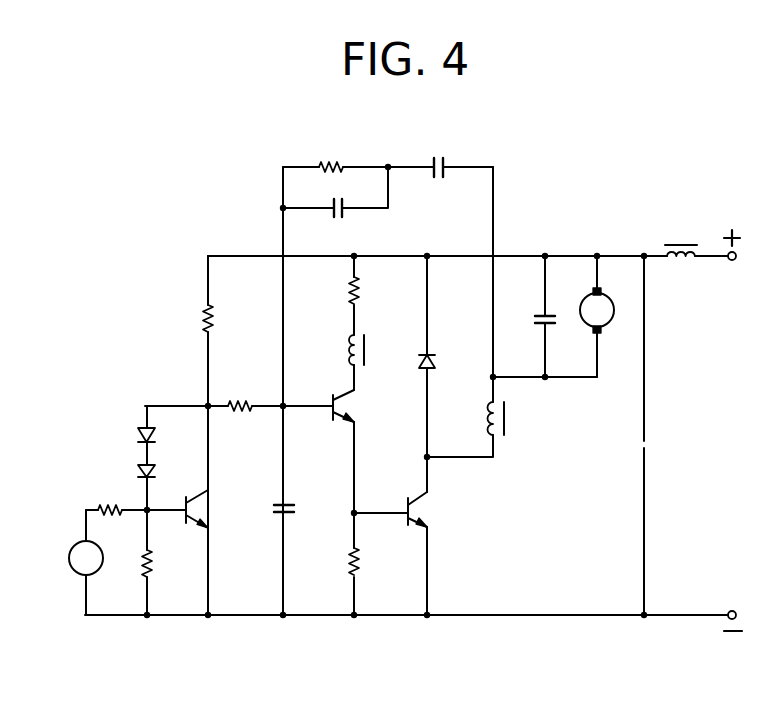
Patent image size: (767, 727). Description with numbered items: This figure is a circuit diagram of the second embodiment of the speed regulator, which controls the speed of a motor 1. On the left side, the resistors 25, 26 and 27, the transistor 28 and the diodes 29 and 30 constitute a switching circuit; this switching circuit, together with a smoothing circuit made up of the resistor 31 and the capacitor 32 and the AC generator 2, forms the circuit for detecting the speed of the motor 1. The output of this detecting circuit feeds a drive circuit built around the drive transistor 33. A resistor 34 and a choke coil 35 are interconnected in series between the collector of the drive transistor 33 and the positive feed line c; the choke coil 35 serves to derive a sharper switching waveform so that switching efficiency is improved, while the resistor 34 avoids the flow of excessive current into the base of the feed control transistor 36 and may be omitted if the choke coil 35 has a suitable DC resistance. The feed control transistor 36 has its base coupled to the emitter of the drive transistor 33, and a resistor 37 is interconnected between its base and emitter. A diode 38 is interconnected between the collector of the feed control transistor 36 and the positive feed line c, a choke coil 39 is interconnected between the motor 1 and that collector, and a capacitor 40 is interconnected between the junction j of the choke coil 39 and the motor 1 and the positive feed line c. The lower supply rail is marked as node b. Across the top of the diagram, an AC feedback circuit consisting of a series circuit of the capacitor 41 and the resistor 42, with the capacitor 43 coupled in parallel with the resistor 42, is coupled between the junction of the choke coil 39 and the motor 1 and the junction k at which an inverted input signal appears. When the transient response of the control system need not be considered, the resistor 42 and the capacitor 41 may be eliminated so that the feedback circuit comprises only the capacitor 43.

The motor 1 is at (612, 326).
The AC generator 2 is at (78, 571).
The resistor 25 is at (121, 513).
The resistor 26 is at (152, 565).
The resistor 27 is at (202, 322).
The transistor 28 is at (200, 511).
The diode 29 is at (137, 434).
The diode 30 is at (138, 470).
The resistor 31 is at (243, 412).
The capacitor 32 is at (296, 508).
The drive transistor 33 is at (349, 405).
The resistor 34 is at (360, 296).
The choke coil 35 is at (366, 345).
The feed control transistor 36 is at (420, 506).
The resistor 37 is at (360, 563).
The diode 38 is at (437, 360).
The choke coil 39 is at (507, 420).
The capacitor 40 is at (557, 322).
The capacitor 41 is at (438, 156).
The resistor 42 is at (332, 161).
The capacitor 43 is at (345, 210).
The negative feed line b is at (208, 617).
The positive feed line c is at (206, 254).
The junction j is at (575, 378).
The junction k is at (283, 404).